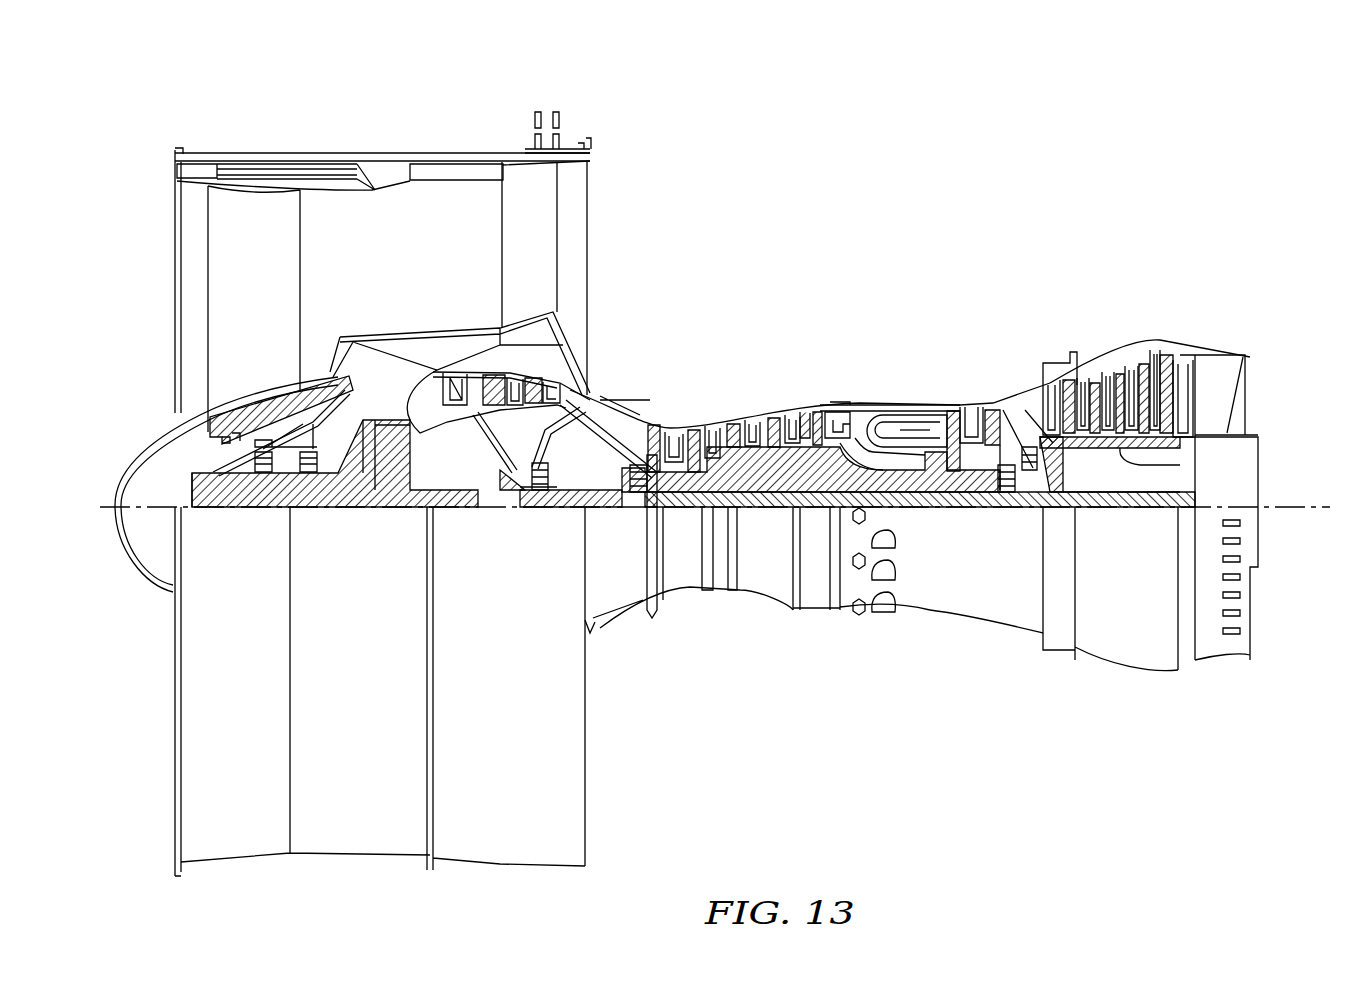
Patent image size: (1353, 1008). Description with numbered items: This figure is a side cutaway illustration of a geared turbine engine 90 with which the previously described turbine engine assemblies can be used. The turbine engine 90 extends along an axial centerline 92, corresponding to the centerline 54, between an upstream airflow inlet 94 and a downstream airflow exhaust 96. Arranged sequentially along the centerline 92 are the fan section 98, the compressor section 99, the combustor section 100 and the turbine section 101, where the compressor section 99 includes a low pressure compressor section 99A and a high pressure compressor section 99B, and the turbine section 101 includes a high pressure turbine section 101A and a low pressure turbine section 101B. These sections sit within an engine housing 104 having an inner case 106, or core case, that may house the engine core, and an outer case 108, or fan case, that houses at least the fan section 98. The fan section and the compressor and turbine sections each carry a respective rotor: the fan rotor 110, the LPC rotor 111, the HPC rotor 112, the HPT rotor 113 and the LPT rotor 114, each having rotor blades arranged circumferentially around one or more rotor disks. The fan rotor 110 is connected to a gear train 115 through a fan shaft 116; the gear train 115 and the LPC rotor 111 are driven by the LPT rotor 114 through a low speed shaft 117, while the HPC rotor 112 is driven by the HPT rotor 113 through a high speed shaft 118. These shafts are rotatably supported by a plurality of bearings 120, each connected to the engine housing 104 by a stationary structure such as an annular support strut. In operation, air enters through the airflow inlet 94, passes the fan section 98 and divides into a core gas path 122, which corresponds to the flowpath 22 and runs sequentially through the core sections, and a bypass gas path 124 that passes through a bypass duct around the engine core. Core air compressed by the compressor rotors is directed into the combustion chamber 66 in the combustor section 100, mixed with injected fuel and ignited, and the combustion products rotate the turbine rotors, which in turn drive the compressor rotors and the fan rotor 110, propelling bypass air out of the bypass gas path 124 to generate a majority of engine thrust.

The geared turbine engine 90 is at (130, 126).
The airflow inlet 94 is at (174, 236).
The fan section 98 is at (343, 129).
The compressor section 99 is at (813, 62).
The low pressure compressor section 99A is at (590, 113).
The high pressure compressor section 99B is at (812, 325).
The combustor section 100 is at (940, 323).
The turbine section 101 is at (1205, 248).
The high pressure turbine section 101A is at (1020, 323).
The low pressure turbine section 101B is at (1205, 323).
The fan rotor 110 is at (200, 414).
The bypass gas path 124 is at (432, 264).
The flowpath 22 is at (690, 395).
The core gas path 122 is at (623, 419).
The LPC rotor 111 is at (490, 458).
The HPC rotor 112 is at (763, 468).
The gear train 115 is at (385, 509).
The fan shaft 116 is at (240, 509).
The bearings 120 is at (268, 490).
The combustion chamber 66 is at (897, 434).
The high speed shaft 118 is at (906, 509).
The HPT rotor 113 is at (970, 509).
The LPT rotor 114 is at (1120, 448).
The airflow exhaust 96 is at (1248, 388).
The centerline 54 is at (1253, 588).
The axial centerline 92 is at (1312, 510).
The low speed shaft 117 is at (1130, 509).
The inner case 106 is at (832, 612).
The engine housing 104 is at (628, 650).
The outer case 108 is at (540, 866).